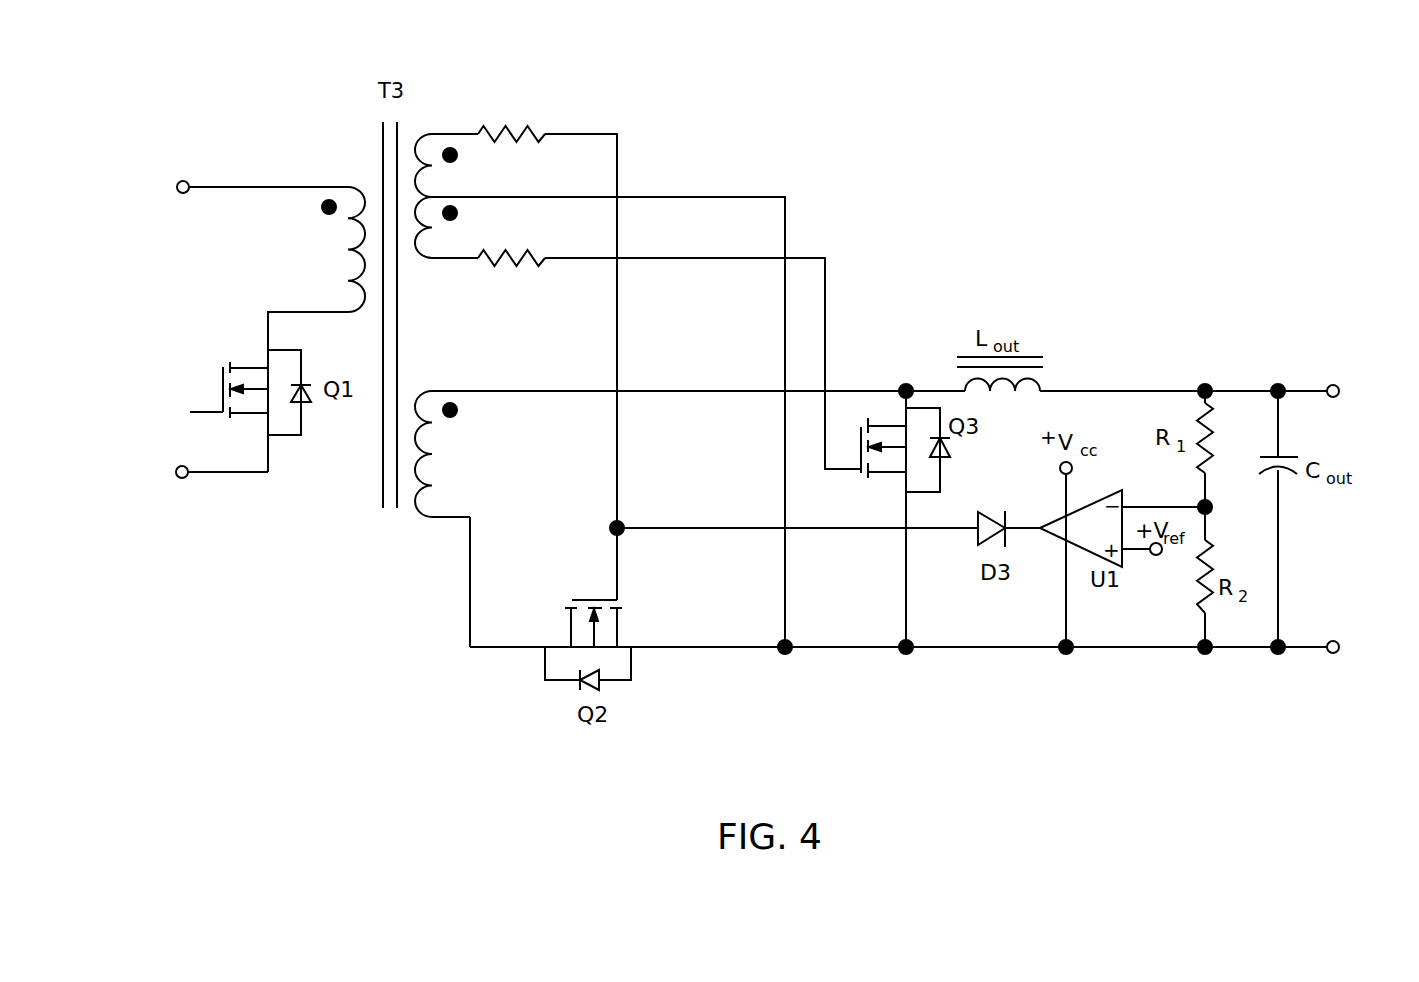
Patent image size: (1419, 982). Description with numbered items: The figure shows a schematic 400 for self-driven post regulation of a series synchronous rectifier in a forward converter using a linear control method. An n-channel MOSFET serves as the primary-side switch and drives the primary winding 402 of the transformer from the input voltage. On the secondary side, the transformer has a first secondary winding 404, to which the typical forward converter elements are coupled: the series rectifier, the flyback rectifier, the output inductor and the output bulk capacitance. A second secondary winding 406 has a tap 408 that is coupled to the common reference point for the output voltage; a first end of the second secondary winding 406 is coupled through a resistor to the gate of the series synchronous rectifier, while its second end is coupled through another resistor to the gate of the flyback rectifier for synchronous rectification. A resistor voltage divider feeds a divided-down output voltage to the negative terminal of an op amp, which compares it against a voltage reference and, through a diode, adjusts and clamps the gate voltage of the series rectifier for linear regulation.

The schematic 400 is at (1131, 119).
The primary winding 402 is at (348, 187).
The first secondary winding 404 is at (432, 391).
The second secondary winding 406 is at (432, 134).
The tap 408 is at (488, 197).